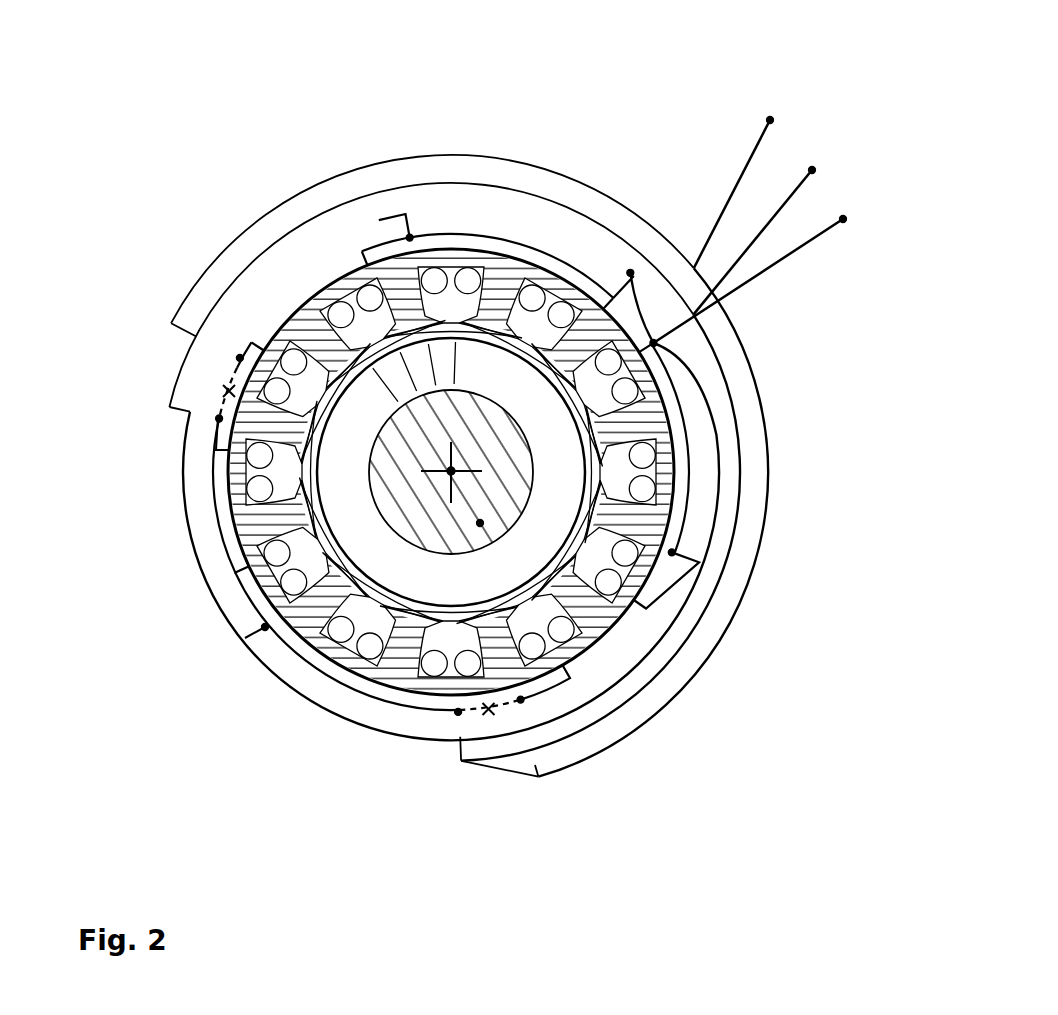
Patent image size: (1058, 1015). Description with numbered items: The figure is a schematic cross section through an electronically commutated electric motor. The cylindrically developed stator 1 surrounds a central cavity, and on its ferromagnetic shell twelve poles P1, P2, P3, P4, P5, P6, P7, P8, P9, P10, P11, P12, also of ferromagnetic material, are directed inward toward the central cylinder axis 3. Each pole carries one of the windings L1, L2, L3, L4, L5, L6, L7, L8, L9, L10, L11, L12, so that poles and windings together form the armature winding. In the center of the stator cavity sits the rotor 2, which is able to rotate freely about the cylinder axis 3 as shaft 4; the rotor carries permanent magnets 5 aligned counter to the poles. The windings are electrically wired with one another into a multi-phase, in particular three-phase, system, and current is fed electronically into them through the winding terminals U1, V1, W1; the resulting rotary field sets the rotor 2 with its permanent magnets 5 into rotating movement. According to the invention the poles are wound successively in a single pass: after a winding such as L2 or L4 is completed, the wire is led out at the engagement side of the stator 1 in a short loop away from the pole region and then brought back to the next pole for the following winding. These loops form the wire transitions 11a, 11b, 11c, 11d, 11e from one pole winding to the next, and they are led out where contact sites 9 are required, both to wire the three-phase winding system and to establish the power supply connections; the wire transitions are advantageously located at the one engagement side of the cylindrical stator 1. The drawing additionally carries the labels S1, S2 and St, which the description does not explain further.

The stator 1 is at (232, 530).
The rotor 2 is at (428, 525).
The central axis 3 is at (451, 471).
The shaft 4 is at (480, 523).
The permanent magnets 5 is at (553, 467).
The contact sites 9 is at (410, 238).
The wire transition 11a is at (364, 250).
The wire transition 11b is at (251, 342).
The wire transition 11c is at (245, 590).
The wire transition 11d is at (540, 693).
The wire transition 11e is at (663, 575).
The pole P1 is at (613, 298).
The pole P2 is at (499, 294).
The pole P3 is at (403, 294).
The pole P4 is at (321, 342).
The pole P5 is at (273, 424).
The pole P6 is at (273, 520).
The pole P7 is at (366, 619).
The pole P8 is at (403, 650).
The pole P9 is at (499, 650).
The pole P10 is at (581, 602).
The pole P11 is at (629, 520).
The pole P12 is at (629, 424).
The winding L1 is at (561, 315).
The winding L2 is at (468, 281).
The winding L3 is at (370, 298).
The winding L4 is at (294, 362).
The winding L5 is at (260, 455).
The winding L6 is at (277, 553).
The winding L7 is at (341, 629).
The winding L8 is at (434, 663).
The winding L9 is at (532, 646).
The winding L10 is at (608, 582).
The winding L11 is at (642, 489).
The winding L12 is at (625, 391).
The joint of housing segments S1 is at (488, 709).
The joint of housing segments S2 is at (229, 391).
The phase connection rings St is at (270, 666).
The winding terminal U1 is at (770, 120).
The winding terminal V1 is at (812, 170).
The winding terminal W1 is at (843, 219).